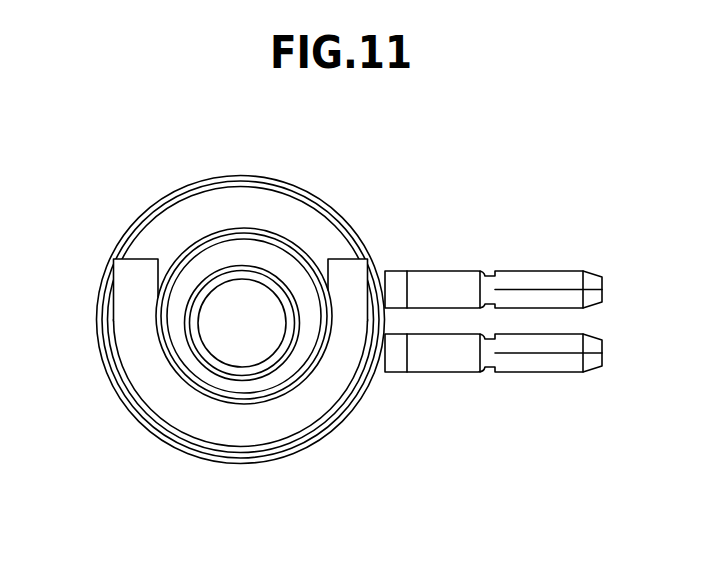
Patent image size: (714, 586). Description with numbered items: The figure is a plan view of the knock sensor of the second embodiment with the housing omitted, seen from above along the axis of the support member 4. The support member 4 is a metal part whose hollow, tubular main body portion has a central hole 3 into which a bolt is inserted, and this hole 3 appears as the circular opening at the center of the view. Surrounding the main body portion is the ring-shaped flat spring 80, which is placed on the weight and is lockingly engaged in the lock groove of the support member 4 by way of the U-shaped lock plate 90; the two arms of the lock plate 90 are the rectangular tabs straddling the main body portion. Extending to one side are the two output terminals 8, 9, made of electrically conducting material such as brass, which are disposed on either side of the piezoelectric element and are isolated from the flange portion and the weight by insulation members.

The flat spring 80 is at (275, 207).
The lock plate 90 is at (171, 407).
The support member 4 is at (262, 388).
The central hole 3 is at (278, 360).
The output terminal 9 is at (527, 277).
The output terminal 8 is at (532, 362).